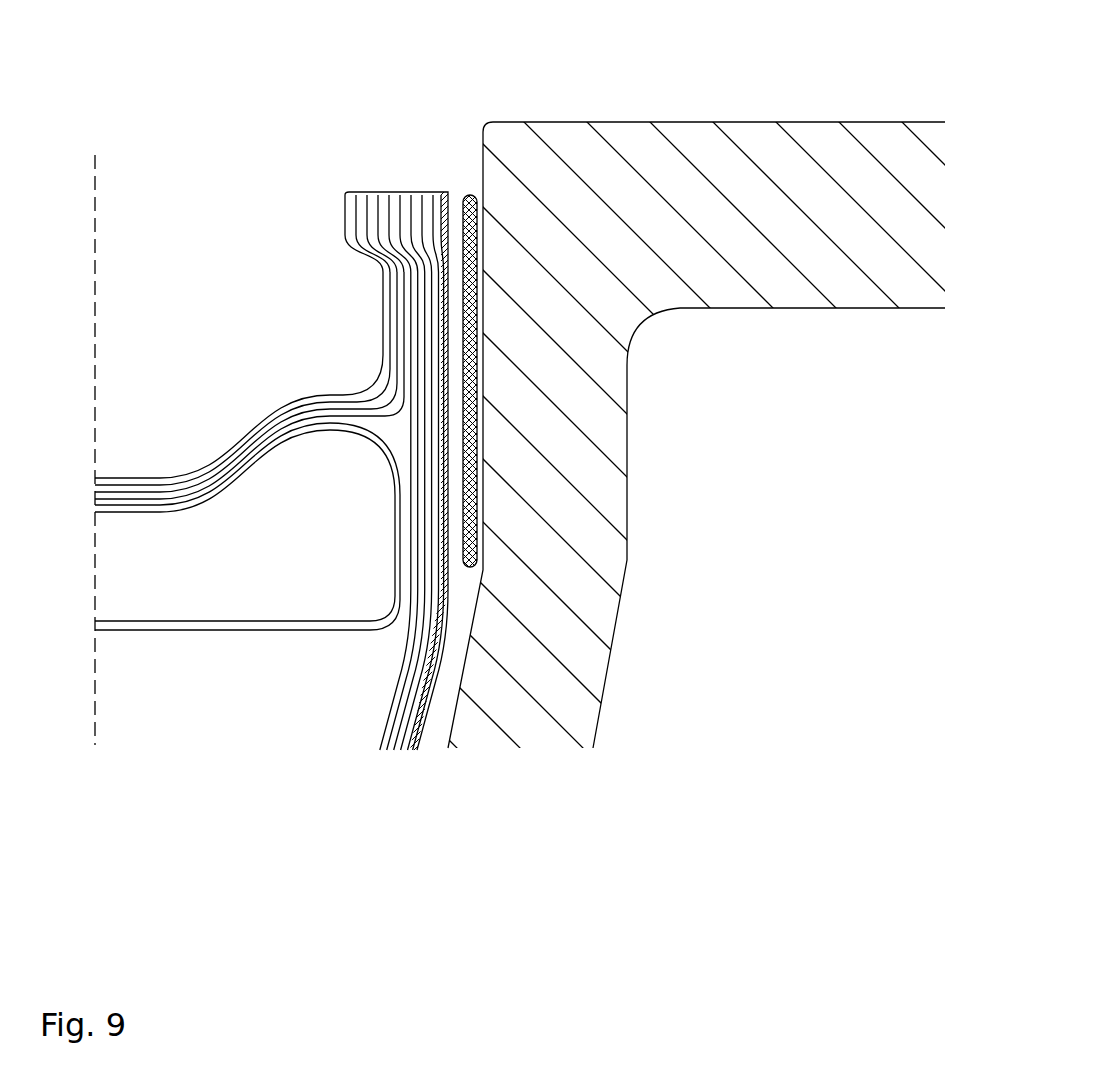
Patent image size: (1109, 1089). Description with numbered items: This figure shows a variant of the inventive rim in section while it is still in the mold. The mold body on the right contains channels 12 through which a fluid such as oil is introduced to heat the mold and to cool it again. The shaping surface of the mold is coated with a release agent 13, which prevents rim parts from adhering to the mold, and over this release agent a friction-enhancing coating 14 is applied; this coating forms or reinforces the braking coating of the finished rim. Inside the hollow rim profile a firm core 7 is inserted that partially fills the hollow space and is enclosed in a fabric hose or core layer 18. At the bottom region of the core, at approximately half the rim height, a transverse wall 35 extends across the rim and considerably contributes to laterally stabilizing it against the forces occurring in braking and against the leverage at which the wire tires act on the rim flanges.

The firm core 7 is at (247, 576).
The channels 12 is at (750, 485).
The release agent 13 is at (477, 192).
The friction-enhancing coating 14 is at (462, 198).
The core layer 18 is at (283, 620).
The transverse wall 35 is at (142, 633).